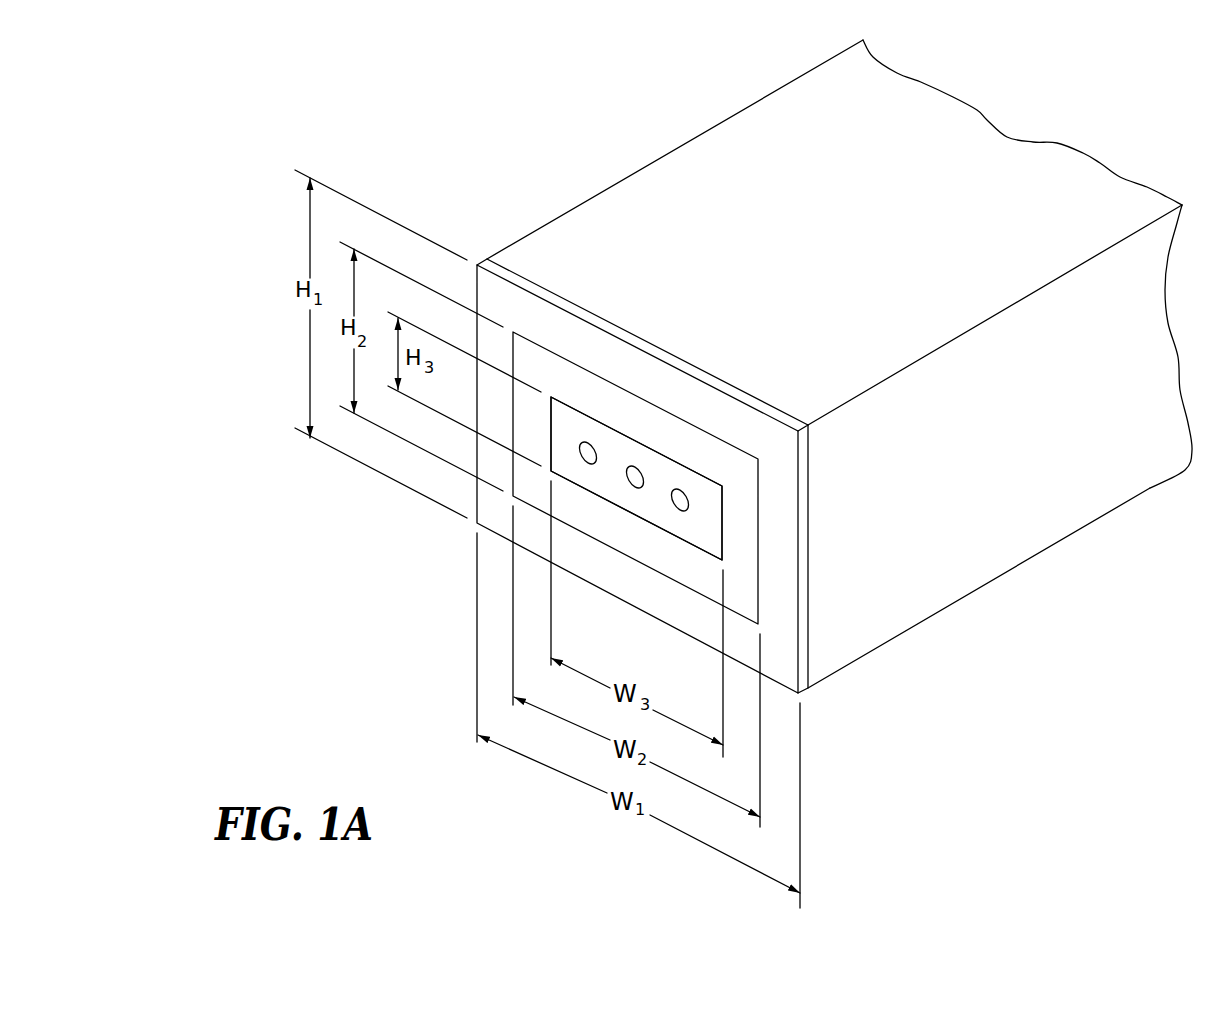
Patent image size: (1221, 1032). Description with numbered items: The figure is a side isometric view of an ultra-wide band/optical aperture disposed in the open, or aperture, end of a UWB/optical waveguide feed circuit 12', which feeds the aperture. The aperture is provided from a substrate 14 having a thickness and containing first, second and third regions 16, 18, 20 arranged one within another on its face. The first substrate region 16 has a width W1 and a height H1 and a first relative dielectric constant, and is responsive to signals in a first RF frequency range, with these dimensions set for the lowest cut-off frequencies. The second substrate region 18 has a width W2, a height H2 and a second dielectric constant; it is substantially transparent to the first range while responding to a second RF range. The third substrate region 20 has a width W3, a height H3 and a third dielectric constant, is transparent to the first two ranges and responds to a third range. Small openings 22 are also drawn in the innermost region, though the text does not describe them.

The UWB/optical waveguide feed circuit 12' is at (844, 364).
The substrate 14 is at (800, 453).
The first substrate region 16 is at (773, 480).
The second substrate region 18 is at (747, 503).
The third substrate region 20 is at (707, 489).
The apertures 22 is at (677, 490).